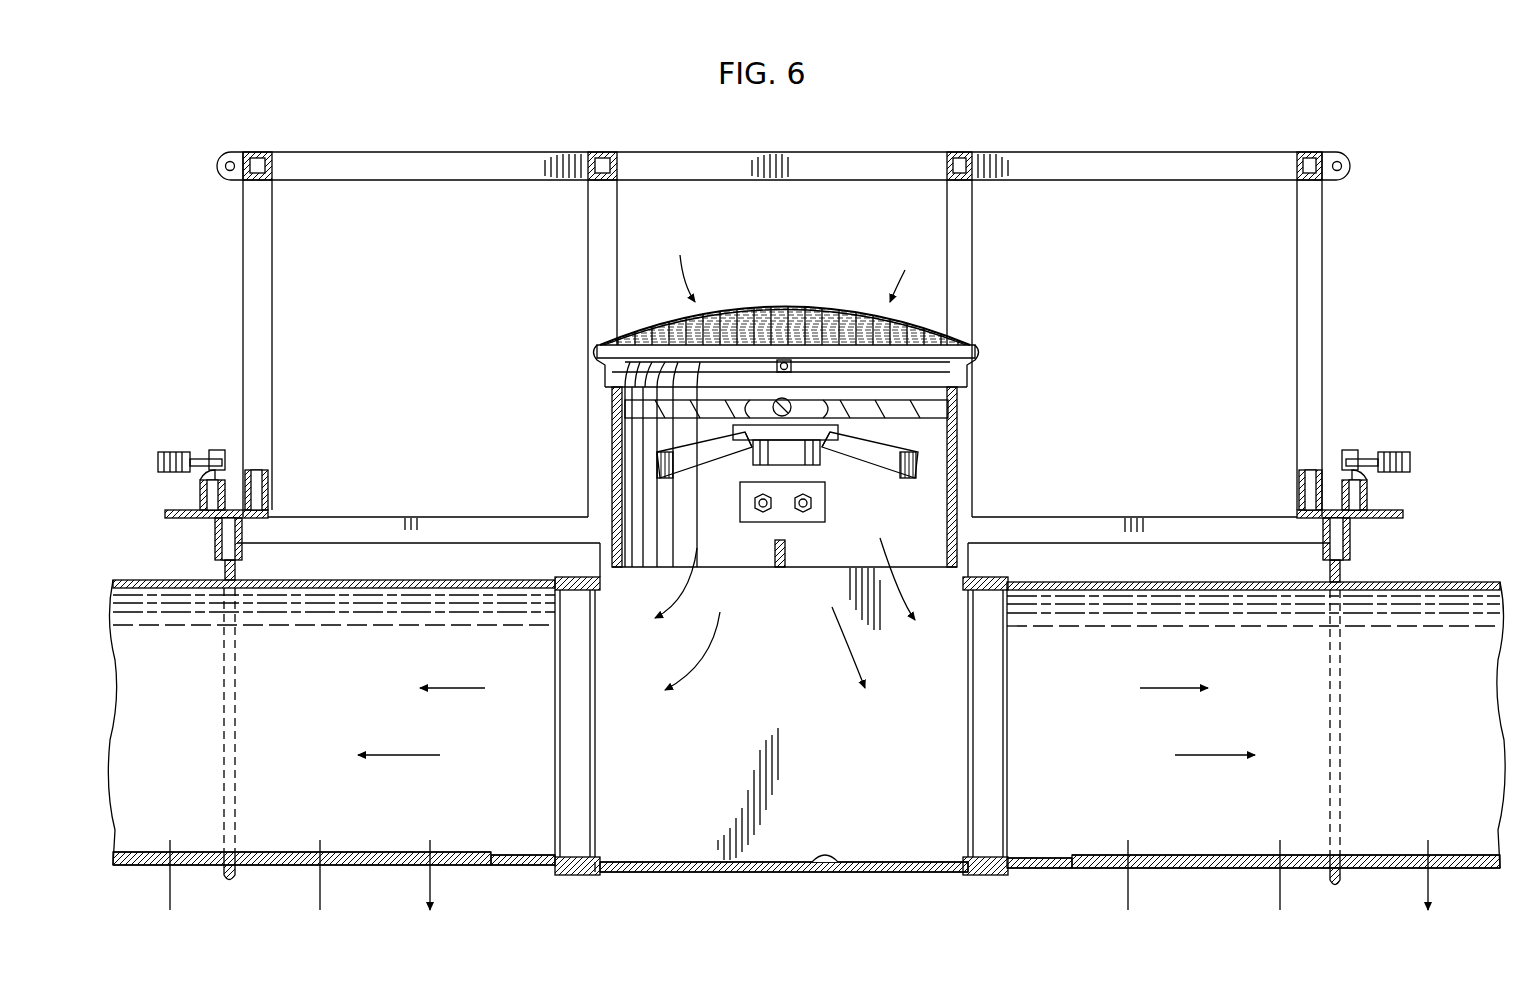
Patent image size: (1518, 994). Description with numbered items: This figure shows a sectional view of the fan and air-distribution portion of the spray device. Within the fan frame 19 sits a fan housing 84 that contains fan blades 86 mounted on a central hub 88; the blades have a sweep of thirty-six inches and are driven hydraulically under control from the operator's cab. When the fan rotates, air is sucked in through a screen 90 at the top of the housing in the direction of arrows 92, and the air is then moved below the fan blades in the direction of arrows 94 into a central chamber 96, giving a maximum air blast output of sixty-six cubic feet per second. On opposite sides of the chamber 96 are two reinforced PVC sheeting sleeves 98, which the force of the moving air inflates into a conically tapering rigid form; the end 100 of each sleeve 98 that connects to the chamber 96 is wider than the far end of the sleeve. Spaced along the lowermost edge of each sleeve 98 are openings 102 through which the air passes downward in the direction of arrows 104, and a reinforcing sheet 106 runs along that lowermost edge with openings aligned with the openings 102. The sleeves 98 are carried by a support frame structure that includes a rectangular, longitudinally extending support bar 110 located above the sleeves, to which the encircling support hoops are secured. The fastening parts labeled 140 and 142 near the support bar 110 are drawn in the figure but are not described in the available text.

The fan frame 19 is at (903, 158).
The fan housing 84 is at (962, 475).
The fan blades 86 is at (962, 396).
The central hub 88 is at (795, 408).
The screen 90 is at (800, 325).
The arrows 92 is at (680, 260).
The arrows 94 is at (700, 655).
The central chamber 96 is at (435, 755).
The reinforced PVC sheeting sleeves 98 is at (370, 575).
The end of sleeve 100 is at (562, 578).
The openings 102 is at (280, 868).
The arrows 104 is at (170, 880).
The reinforcing sheet 106 is at (480, 855).
The support bar 110 is at (175, 502).
The bracket 140 is at (245, 472).
The bolt 142 is at (176, 452).